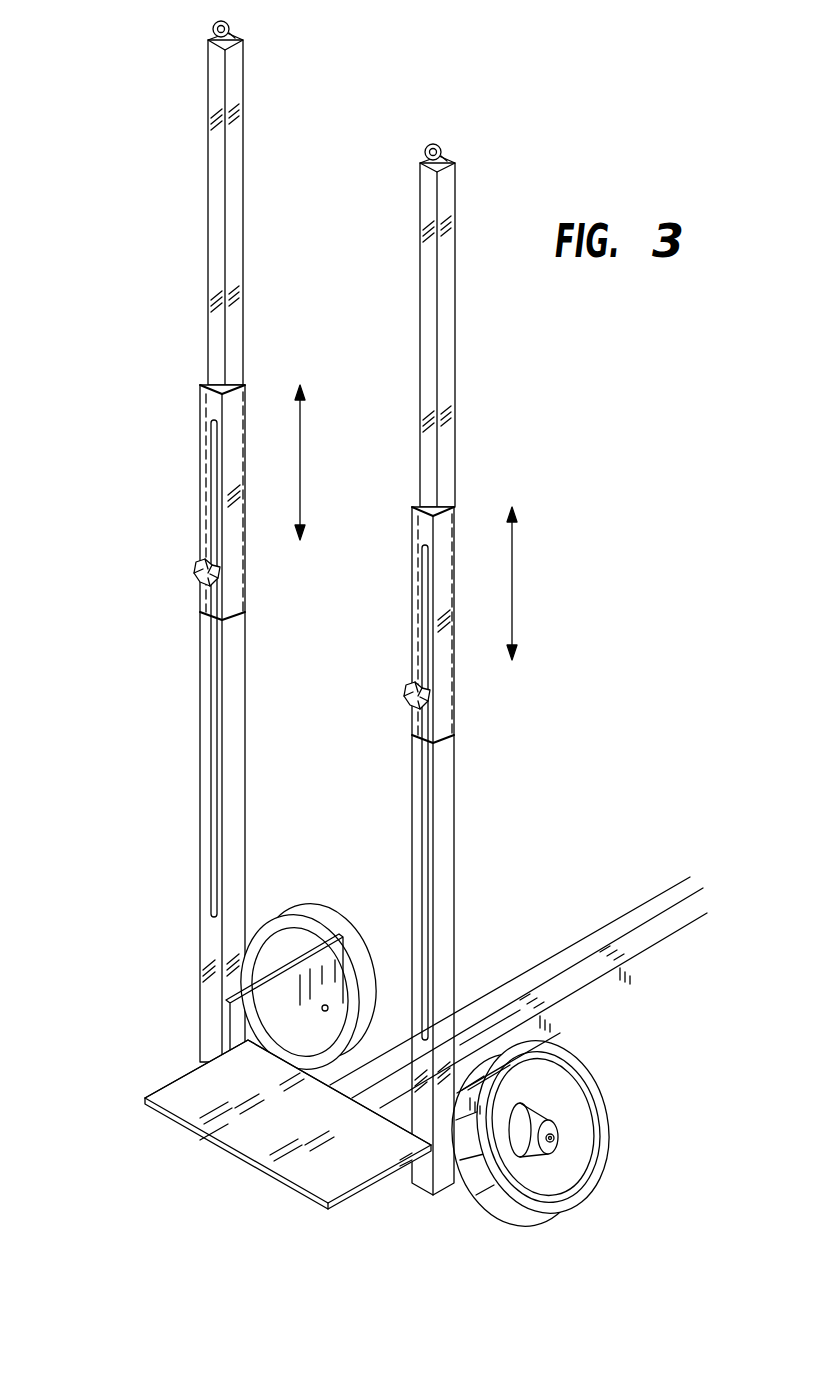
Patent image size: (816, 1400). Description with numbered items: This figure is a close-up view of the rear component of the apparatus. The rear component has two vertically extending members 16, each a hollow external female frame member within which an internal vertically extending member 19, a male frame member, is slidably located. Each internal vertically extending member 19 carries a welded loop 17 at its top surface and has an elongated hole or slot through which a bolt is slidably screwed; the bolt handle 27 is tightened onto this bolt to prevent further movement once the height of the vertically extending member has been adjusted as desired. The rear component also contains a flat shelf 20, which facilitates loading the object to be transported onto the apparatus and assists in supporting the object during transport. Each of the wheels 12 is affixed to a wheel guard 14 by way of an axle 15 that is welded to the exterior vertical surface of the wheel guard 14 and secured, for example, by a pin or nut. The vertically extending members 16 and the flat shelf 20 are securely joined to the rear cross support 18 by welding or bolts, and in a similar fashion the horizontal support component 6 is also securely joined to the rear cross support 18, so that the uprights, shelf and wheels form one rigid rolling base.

The horizontal support component 6 is at (625, 948).
The wheel 12 is at (350, 938).
The wheel guard 14 is at (313, 975).
The axle 15 is at (553, 1137).
The vertically extending member 16 is at (203, 707).
The welded loop 17 is at (217, 24).
The rear cross support 18 is at (407, 1165).
The internal vertically extending member 19 is at (212, 67).
The flat shelf 20 is at (270, 1142).
The bolt handle 27 is at (196, 578).